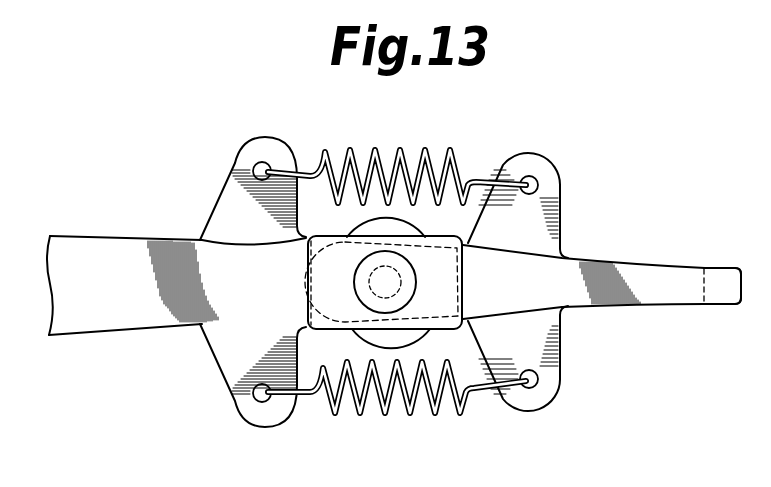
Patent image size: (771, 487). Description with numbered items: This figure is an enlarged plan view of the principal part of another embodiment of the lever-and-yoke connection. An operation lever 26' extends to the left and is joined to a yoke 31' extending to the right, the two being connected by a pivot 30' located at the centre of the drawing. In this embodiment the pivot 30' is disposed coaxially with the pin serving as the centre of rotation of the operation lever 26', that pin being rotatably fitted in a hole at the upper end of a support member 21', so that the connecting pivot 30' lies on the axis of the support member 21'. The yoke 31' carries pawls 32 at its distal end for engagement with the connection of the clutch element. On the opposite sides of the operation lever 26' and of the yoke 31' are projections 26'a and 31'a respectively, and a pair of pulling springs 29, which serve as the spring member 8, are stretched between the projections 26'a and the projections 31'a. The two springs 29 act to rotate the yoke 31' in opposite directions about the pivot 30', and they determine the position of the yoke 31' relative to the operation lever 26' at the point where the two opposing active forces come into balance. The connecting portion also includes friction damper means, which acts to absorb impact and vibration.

The spring member 8 is at (437, 160).
The support member 21' is at (383, 288).
The operation lever 26' is at (176, 301).
The projections 26'a is at (238, 282).
The pulling springs 29 is at (385, 152).
The pivot 30' is at (404, 282).
The yoke 31' is at (602, 294).
The projections 31'a is at (540, 282).
The pawls 32 is at (725, 302).